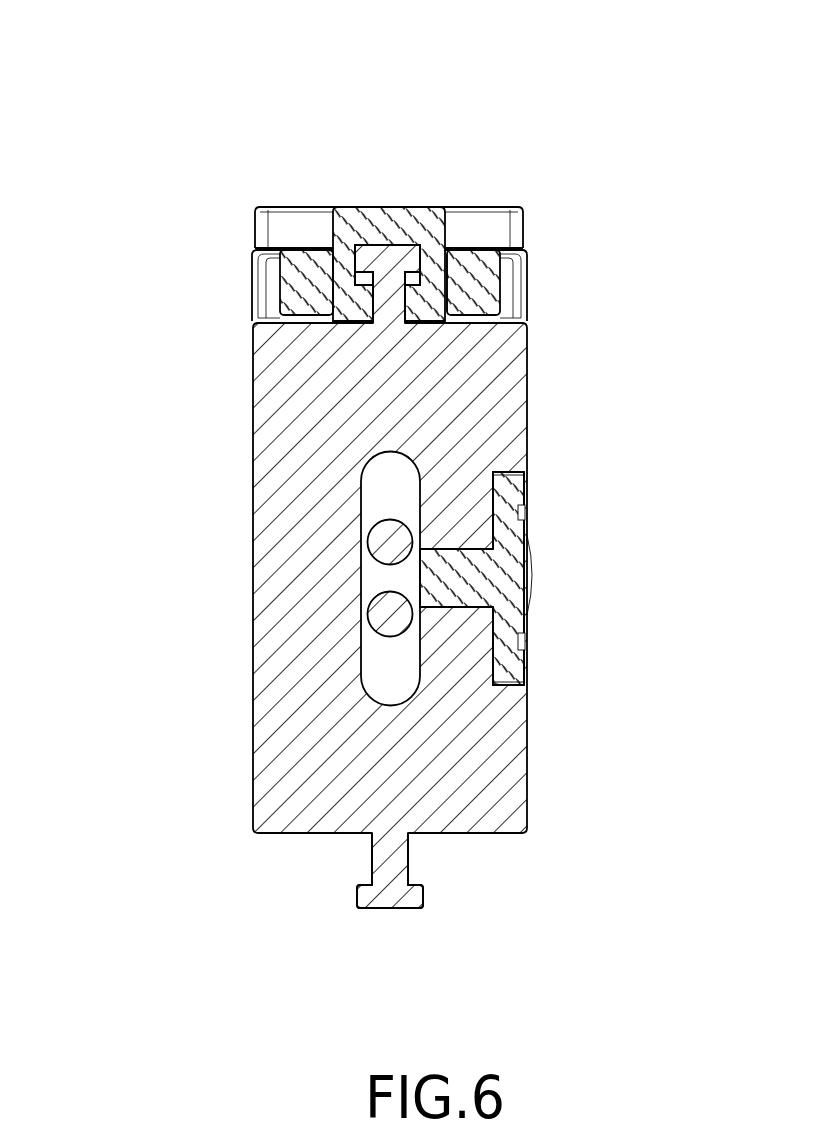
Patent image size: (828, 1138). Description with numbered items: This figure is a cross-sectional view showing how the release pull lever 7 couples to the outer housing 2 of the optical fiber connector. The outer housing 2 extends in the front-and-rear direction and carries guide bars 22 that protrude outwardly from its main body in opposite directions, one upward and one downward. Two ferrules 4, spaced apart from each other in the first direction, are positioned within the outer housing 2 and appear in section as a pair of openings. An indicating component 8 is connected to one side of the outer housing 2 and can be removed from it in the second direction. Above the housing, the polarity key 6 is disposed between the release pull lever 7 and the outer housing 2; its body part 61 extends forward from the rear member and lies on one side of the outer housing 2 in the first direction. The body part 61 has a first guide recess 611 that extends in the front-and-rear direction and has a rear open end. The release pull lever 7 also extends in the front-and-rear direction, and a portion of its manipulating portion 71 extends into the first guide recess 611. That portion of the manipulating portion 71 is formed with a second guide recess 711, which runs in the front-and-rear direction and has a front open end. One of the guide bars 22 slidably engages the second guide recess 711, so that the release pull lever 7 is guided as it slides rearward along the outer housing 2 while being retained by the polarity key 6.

The outer housing 2 is at (180, 562).
The guide bar 22 is at (395, 246).
The ferrule 4 is at (385, 532).
The polarity key 6 is at (540, 272).
The body part 61 is at (480, 300).
The first guide recess 611 is at (440, 250).
The release pull lever 7 is at (383, 138).
The manipulating portion 71 is at (362, 203).
The second guide recess 711 is at (352, 259).
The indicating component 8 is at (575, 525).